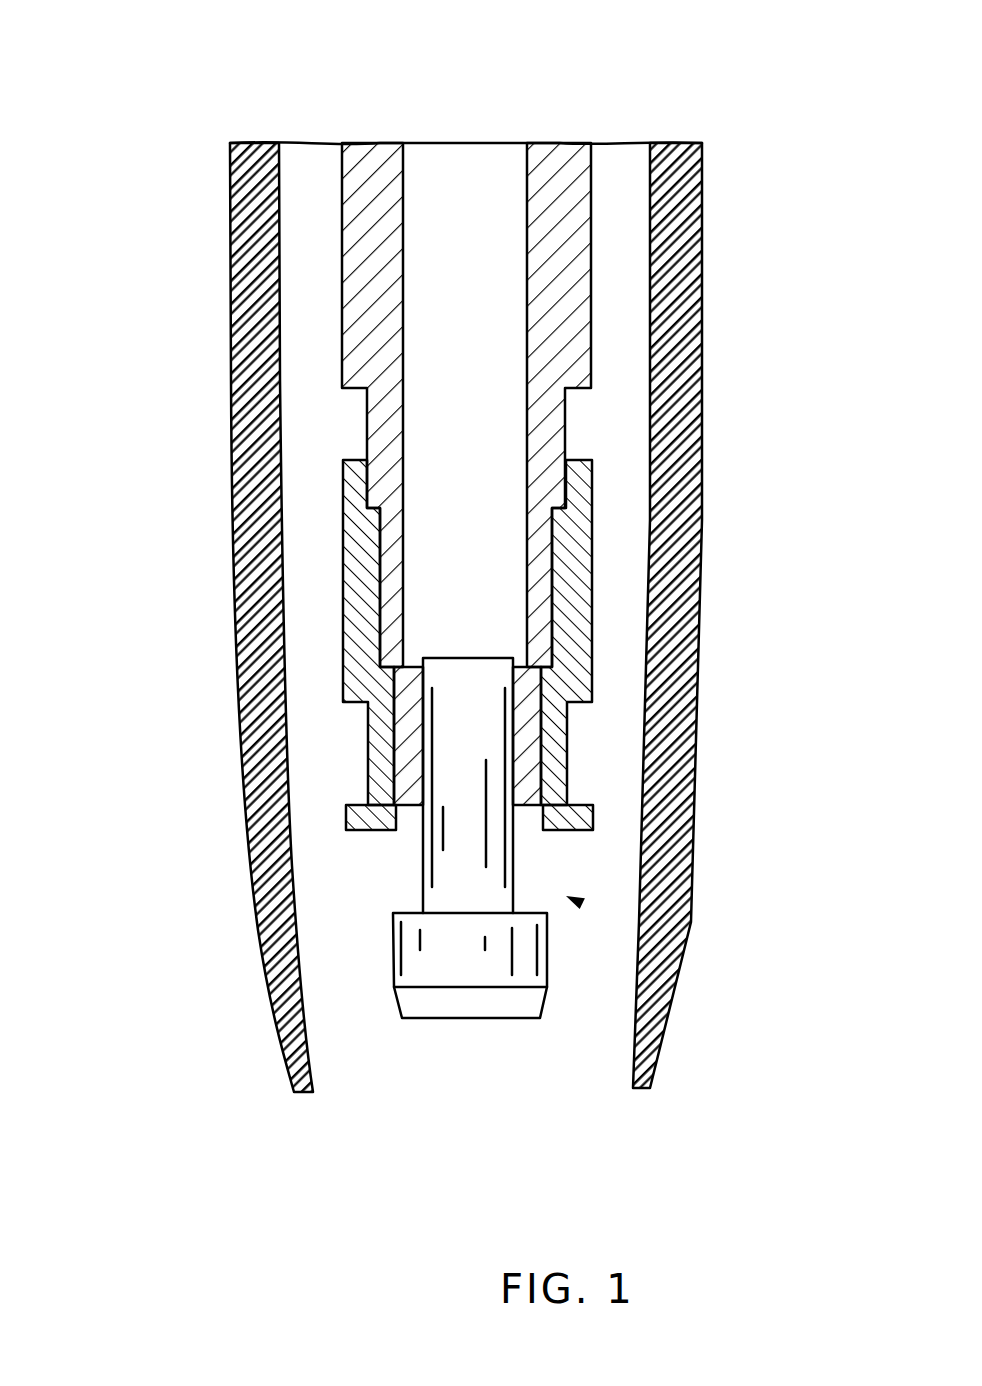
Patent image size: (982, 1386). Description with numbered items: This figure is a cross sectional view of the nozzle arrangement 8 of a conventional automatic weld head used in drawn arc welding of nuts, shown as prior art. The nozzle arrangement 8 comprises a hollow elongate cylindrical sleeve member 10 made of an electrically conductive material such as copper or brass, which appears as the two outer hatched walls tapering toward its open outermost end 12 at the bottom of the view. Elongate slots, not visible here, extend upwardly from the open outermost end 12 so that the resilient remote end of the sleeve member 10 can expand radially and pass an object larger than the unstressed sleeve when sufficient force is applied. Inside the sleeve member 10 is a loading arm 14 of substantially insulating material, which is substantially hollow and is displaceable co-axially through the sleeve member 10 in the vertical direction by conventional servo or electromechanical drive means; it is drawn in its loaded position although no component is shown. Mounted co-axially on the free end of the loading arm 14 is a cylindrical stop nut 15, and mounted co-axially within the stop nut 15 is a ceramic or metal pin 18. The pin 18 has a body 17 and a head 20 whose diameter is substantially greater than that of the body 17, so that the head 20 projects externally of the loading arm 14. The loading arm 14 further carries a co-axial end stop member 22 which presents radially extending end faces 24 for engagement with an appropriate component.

The nozzle arrangement 8 is at (745, 85).
The sleeve member 10 is at (683, 277).
The open outermost end 12 is at (343, 1086).
The loading arm 14 is at (553, 167).
The stop nut 15 is at (530, 722).
The body of the pin 17 is at (493, 822).
The pin 18 is at (580, 903).
The head 20 is at (530, 973).
The end stop member 22 is at (378, 731).
The end faces 24 is at (372, 833).